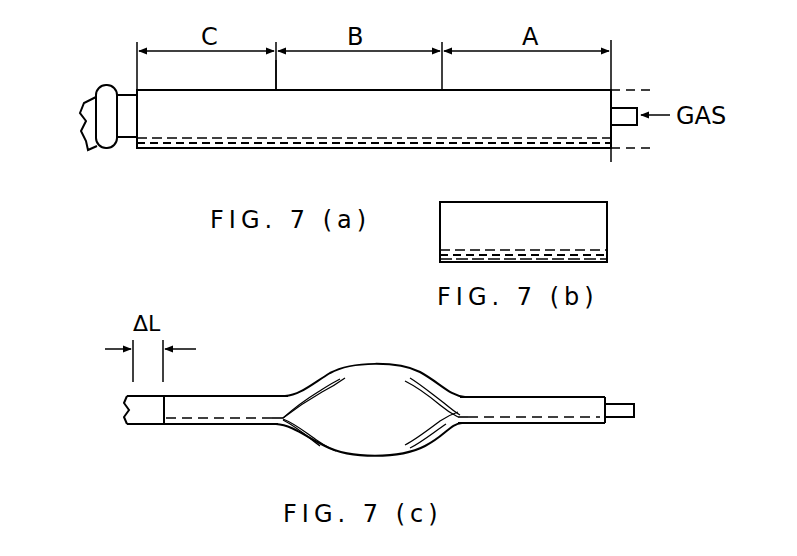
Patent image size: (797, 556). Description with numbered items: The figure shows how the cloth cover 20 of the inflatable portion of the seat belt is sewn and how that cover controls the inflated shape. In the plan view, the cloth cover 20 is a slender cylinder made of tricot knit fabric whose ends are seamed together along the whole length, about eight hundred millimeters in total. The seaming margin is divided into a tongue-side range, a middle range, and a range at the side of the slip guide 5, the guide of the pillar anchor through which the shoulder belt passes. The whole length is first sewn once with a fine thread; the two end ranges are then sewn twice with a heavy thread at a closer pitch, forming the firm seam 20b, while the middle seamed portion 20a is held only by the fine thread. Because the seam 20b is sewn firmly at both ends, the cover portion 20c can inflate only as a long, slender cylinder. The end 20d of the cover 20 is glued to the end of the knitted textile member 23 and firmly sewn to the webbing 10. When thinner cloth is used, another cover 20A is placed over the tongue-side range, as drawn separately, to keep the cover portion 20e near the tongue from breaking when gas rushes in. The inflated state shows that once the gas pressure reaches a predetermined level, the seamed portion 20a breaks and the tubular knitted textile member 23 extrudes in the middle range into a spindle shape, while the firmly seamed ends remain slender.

In FIG. 7A, the slip guide 5 is at (105, 86).
In FIG. 7A, the webbing 10 is at (89, 97).
In FIG. 7A, the cloth cover 20 is at (596, 90).
In FIG. 7C, the cloth cover 20 is at (534, 397).
In FIG. 7A, the seamed portion 20a is at (325, 140).
In FIG. 7C, the seamed portion 20a is at (456, 424).
In FIG. 7A, the seam 20b is at (225, 148).
In FIG. 7C, the seam 20b is at (218, 420).
In FIG. 7A, the cover portion 20c is at (215, 90).
In FIG. 7A, the end of cover 20d is at (145, 118).
In FIG. 7A, the cover portion near tongue 20e is at (612, 150).
In FIG. 7B, the another cover 20A is at (607, 237).
In FIG. 7C, the knitted textile member 23 is at (326, 447).